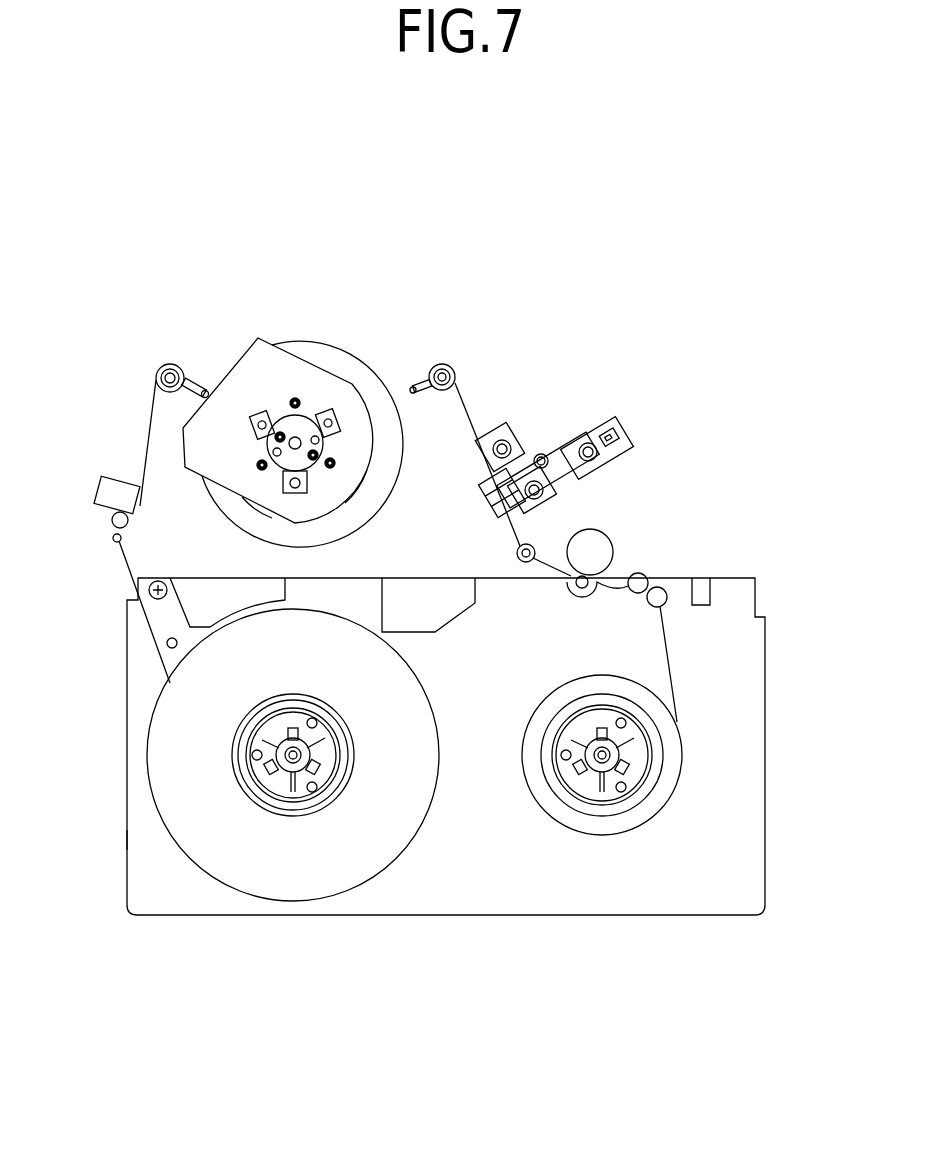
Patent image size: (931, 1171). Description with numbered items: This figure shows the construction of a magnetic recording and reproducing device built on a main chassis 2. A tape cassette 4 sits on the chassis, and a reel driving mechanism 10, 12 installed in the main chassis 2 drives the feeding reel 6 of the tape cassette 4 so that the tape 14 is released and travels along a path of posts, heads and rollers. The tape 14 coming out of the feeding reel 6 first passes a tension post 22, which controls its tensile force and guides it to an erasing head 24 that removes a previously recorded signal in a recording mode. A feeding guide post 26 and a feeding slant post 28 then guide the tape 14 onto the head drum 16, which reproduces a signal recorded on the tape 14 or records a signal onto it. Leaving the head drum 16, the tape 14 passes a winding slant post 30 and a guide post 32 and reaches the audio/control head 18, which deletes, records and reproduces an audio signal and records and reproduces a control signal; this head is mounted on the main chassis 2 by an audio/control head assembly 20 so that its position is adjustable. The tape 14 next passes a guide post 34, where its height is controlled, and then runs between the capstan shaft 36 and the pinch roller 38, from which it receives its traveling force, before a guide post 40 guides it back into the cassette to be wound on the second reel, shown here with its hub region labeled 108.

The main chassis 2 is at (745, 848).
The tape cassette 4 is at (150, 838).
The feeding reel 6 is at (310, 813).
The reel driving mechanism 10 is at (275, 745).
The reel driving mechanism 12 is at (607, 772).
The tape 14 is at (137, 568).
The head drum 16 is at (352, 350).
The audio/control head 18 is at (500, 515).
The audio/control head assembly 20 is at (563, 428).
The tension post 22 is at (113, 539).
The erasing head 24 is at (113, 487).
The feeding guide post 26 is at (157, 378).
The feeding slant post 28 is at (205, 393).
The winding slant post 30 is at (410, 378).
The guide post 32 is at (455, 378).
The guide post 34 is at (533, 550).
The capstan shaft 36 is at (598, 583).
The pinch roller 38 is at (602, 550).
The guide post 40 is at (663, 607).
The take-up reel 108 is at (645, 803).